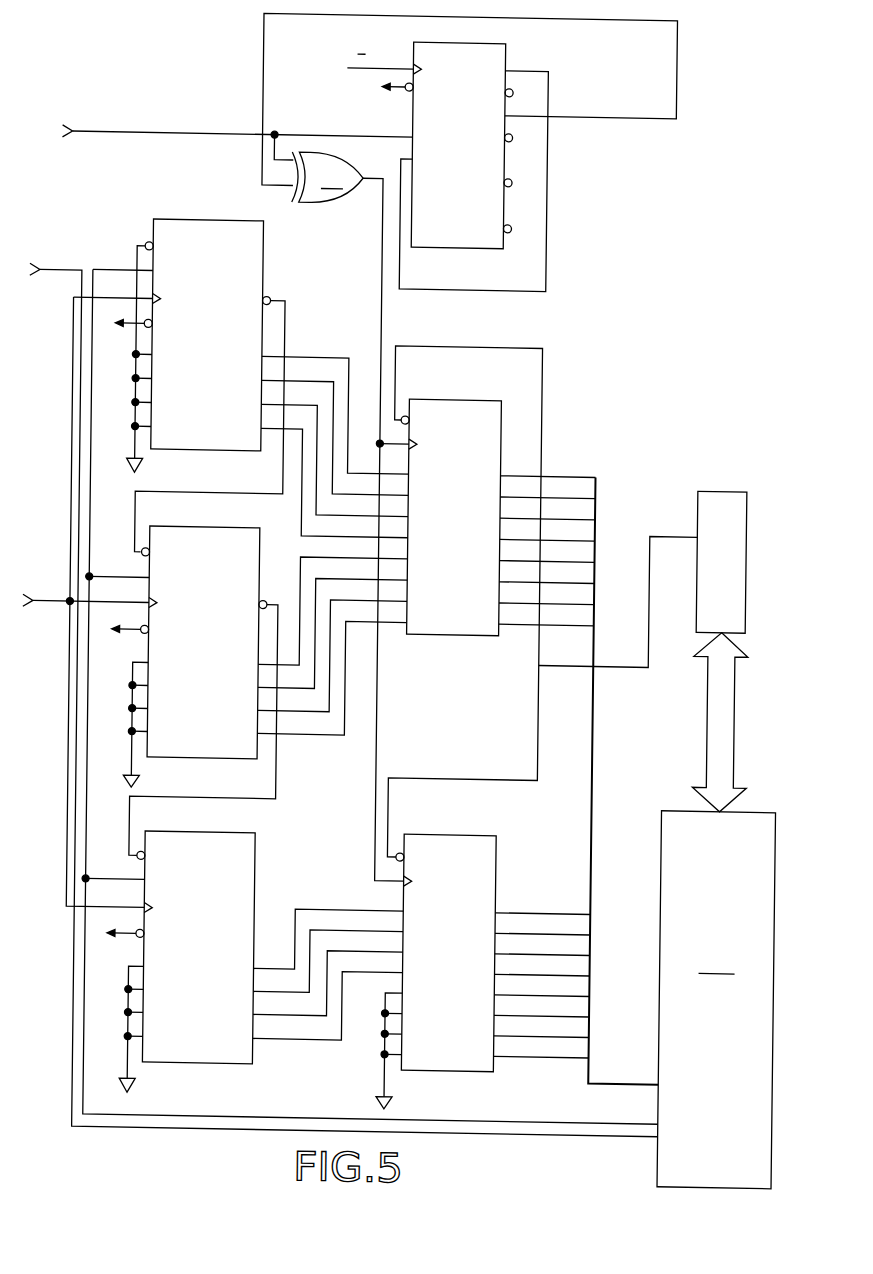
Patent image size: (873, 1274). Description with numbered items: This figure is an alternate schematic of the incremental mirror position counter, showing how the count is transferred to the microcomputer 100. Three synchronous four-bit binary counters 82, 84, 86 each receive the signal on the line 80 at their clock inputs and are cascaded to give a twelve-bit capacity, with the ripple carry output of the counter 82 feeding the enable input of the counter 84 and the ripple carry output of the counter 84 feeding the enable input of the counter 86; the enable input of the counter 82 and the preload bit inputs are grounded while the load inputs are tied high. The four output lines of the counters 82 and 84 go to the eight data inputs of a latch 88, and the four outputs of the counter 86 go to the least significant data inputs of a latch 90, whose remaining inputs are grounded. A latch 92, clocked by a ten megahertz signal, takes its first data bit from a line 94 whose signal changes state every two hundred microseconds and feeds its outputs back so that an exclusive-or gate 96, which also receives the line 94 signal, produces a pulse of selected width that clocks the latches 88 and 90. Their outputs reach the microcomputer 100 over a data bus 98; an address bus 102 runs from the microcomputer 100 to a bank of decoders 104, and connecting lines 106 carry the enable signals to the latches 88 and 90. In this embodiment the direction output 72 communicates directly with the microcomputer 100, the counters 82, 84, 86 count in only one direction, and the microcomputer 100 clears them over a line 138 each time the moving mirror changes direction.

The line 72 is at (70, 276).
The line 80 is at (59, 607).
The synchronous 4-bit binary counter 82 is at (202, 224).
The synchronous 4-bit binary counter 84 is at (261, 556).
The synchronous 4-bit binary counter 86 is at (258, 866).
The latch 88 is at (462, 399).
The latch 90 is at (499, 866).
The latch 92 is at (501, 50).
The line 94 is at (124, 137).
The exclusive-or gate 96 is at (348, 516).
The data bus 98 is at (594, 800).
The microcomputer 100 is at (716, 1000).
The address bus 102 is at (708, 728).
The bank of decoders 104 is at (696, 506).
The connecting lines 106 is at (540, 738).
The line 138 is at (289, 1120).